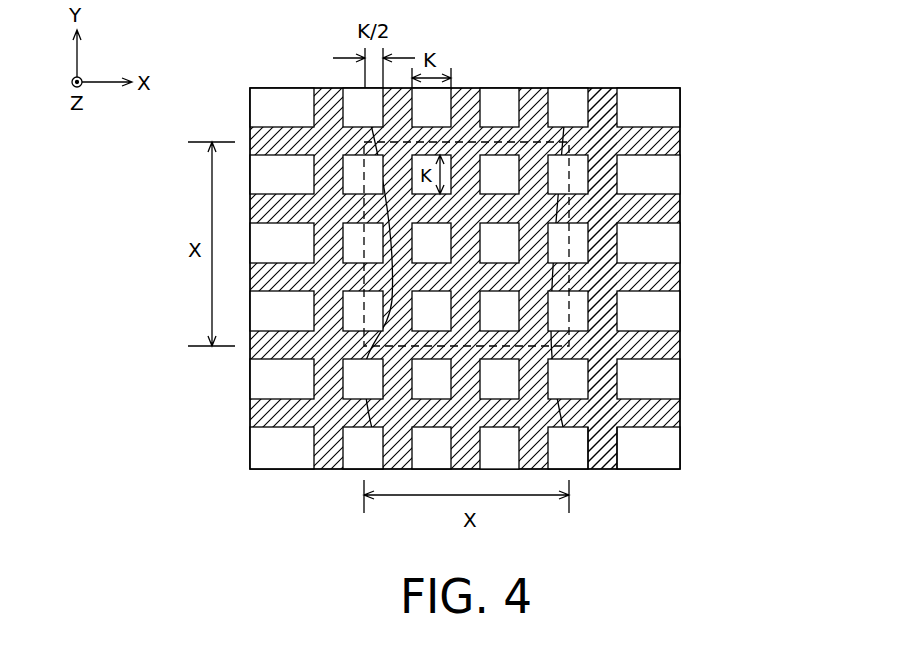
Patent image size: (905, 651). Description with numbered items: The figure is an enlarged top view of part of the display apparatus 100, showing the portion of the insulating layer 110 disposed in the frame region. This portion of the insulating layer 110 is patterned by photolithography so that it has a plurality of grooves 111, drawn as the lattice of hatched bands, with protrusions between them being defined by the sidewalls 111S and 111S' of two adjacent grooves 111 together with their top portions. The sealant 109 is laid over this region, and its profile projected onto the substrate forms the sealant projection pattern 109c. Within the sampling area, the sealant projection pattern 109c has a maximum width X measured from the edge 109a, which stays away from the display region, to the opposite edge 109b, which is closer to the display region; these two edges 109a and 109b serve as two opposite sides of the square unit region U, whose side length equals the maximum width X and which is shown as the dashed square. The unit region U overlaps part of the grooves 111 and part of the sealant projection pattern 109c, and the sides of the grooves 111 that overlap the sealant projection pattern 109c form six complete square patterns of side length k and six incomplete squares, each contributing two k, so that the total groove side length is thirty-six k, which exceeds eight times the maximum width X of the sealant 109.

The display apparatus 100 is at (243, 75).
The sealant 109 is at (497, 142).
The edge of the sealant staying away from the display region 109a is at (357, 379).
The edge of the sealant getting close to the display region 109b is at (565, 377).
The sealant projection pattern 109c is at (691, 201).
The insulating layer 110 is at (668, 110).
The grooves 111 is at (627, 109).
The sidewall of the groove 111S is at (661, 471).
The sidewall of the adjacent groove 111S' is at (604, 482).
The unit region U is at (580, 240).